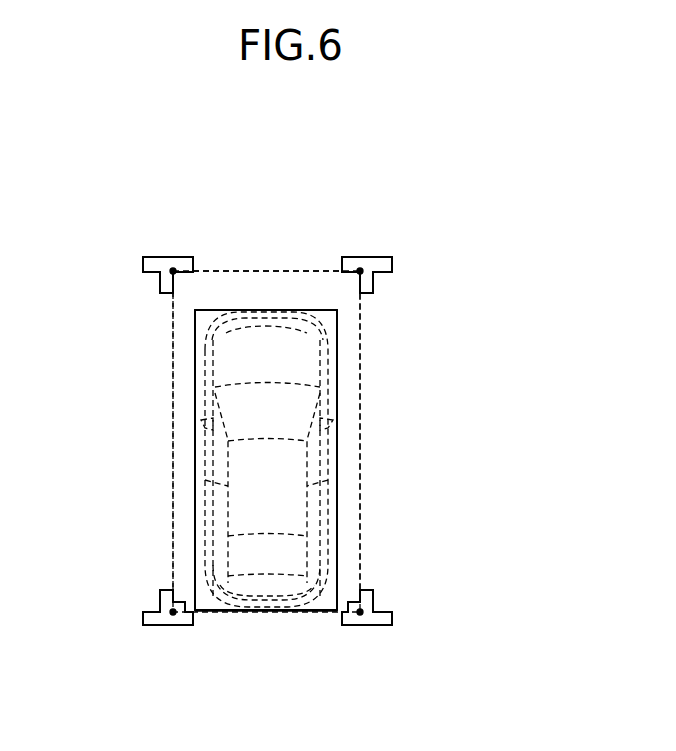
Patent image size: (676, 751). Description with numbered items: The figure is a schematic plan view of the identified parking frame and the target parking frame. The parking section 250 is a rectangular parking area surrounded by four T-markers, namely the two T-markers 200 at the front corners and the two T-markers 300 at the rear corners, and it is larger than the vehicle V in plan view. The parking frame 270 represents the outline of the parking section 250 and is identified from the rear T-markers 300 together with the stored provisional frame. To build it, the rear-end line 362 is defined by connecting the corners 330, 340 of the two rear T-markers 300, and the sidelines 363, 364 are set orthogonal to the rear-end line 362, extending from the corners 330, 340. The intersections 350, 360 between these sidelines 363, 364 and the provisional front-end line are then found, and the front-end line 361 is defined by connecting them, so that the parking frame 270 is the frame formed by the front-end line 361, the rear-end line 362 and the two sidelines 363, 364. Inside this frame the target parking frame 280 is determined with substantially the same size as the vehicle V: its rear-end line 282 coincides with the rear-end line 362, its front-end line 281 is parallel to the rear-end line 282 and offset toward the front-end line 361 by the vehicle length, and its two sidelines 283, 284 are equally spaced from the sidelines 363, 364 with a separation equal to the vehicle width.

The T-marker 200 is at (160, 257).
The T-marker 300 is at (152, 626).
The parking section 250 is at (319, 300).
The intersection 350 is at (173, 271).
The intersection 360 is at (362, 273).
The corner 330 is at (173, 614).
The corner 340 is at (360, 614).
The front-end line 361 is at (214, 268).
The rear-end line 362 is at (263, 612).
The sideline 363 is at (172, 393).
The sideline 364 is at (362, 478).
The parking frame 270 is at (362, 512).
The target parking frame 280 is at (340, 397).
The front-end line 281 is at (232, 310).
The rear-end line 282 is at (338, 590).
The sideline 283 is at (196, 505).
The sideline 284 is at (340, 441).
The vehicle V is at (298, 366).